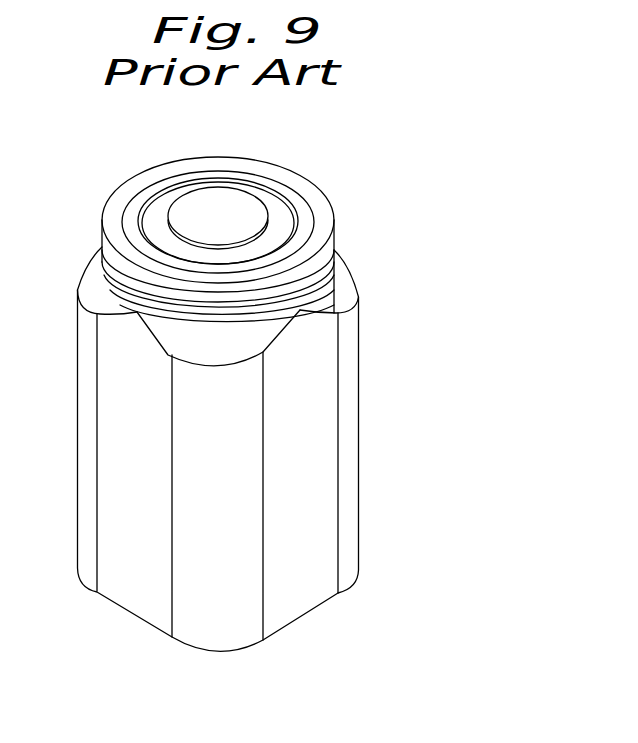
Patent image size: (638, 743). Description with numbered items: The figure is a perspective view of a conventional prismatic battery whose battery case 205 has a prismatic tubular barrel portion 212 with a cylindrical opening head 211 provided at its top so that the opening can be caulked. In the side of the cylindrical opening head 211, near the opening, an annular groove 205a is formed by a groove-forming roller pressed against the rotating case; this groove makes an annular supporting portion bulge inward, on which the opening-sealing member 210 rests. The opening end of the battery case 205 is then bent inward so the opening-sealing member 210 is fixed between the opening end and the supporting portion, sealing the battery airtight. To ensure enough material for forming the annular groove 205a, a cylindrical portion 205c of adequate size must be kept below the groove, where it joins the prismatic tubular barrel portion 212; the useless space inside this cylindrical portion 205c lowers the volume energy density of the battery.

The battery case 205 is at (373, 486).
The annular groove 205a is at (325, 270).
The cylindrical portion 205c is at (313, 293).
The opening-sealing member 210 is at (243, 214).
The cylindrical opening head 211 is at (334, 233).
The prismatic tubular barrel portion 212 is at (317, 423).